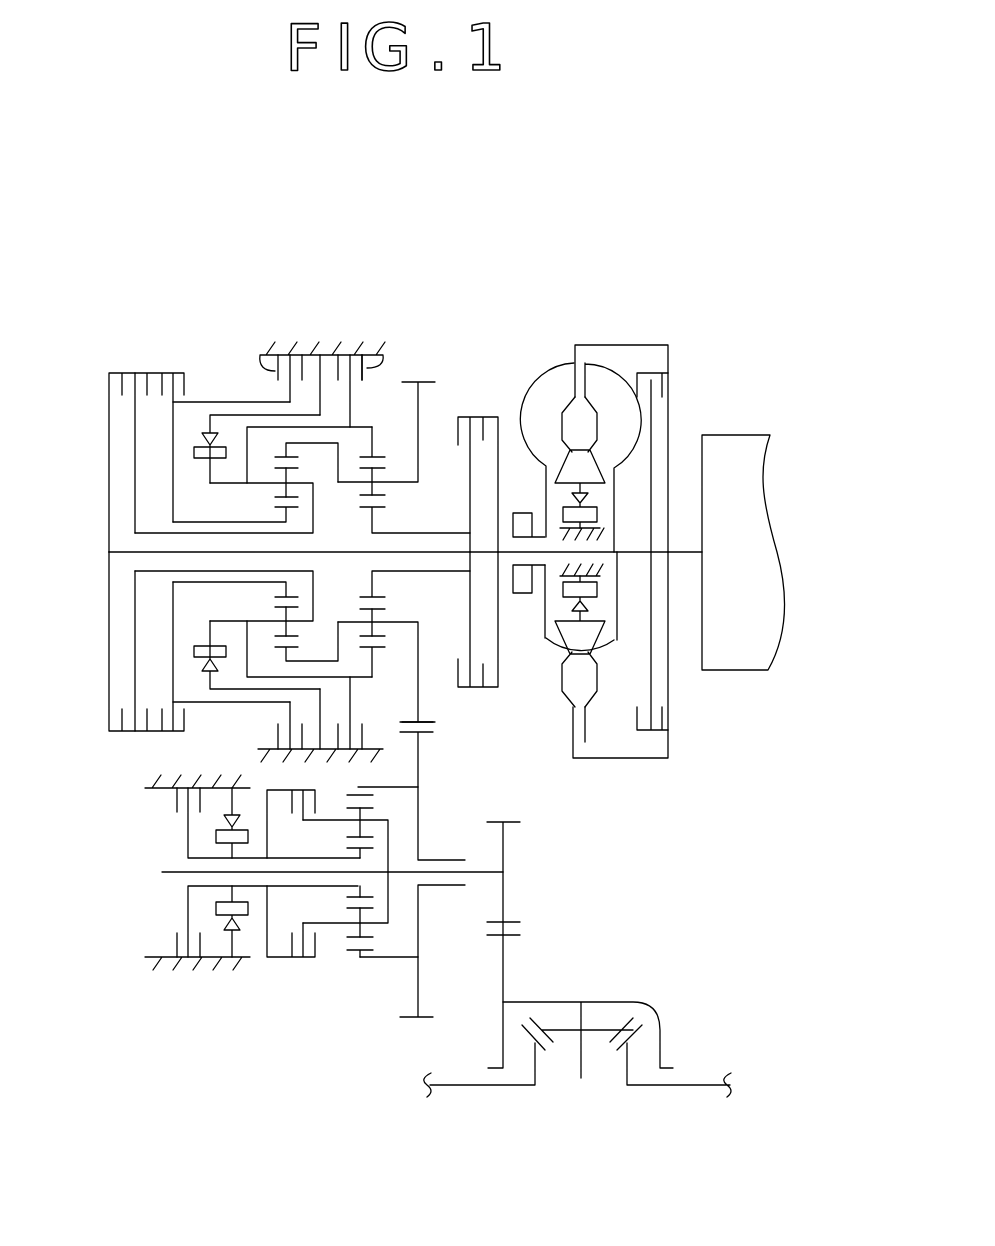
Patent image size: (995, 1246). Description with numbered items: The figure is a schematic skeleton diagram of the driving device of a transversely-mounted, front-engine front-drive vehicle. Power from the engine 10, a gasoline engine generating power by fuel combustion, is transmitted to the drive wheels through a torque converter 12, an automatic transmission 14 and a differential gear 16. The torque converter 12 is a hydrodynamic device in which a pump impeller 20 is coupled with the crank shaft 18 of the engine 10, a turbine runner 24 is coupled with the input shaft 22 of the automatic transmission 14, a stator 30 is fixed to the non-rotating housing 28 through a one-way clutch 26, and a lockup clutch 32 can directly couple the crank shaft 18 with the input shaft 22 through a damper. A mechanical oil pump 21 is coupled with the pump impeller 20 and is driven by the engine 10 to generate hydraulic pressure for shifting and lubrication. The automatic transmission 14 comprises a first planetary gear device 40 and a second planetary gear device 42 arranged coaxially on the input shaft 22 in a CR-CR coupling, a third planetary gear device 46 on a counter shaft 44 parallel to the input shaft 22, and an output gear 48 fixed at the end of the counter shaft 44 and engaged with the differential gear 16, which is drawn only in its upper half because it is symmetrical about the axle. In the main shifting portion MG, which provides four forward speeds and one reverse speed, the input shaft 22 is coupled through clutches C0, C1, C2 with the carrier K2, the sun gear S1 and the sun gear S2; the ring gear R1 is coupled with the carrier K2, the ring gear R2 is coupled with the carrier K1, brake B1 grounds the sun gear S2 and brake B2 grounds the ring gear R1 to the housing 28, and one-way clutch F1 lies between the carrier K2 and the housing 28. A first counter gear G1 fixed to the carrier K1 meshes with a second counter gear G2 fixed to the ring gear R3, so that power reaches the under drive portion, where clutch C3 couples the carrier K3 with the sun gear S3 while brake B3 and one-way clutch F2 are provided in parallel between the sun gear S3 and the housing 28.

The engine 10 is at (740, 453).
The torque converter 12 is at (625, 519).
The automatic transmission 14 is at (350, 479).
The differential gear 16 is at (573, 948).
The crank shaft 18 is at (688, 557).
The pump impeller 20 is at (563, 380).
The mechanical oil pump 21 is at (522, 513).
The input shaft 22 is at (442, 555).
The turbine runner 24 is at (598, 723).
The one-way clutch 26 is at (567, 637).
The housing 28 is at (562, 572).
The stator 30 is at (575, 467).
The lockup clutch 32 is at (667, 387).
The first planetary gear device 40 is at (404, 427).
The second planetary gear device 42 is at (253, 439).
The counter shaft 44 is at (173, 870).
The third planetary gear device 46 is at (349, 917).
The output gear 48 is at (513, 920).
The main shifting portion MG is at (89, 687).
The clutch C0 is at (125, 372).
The clutch C1 is at (473, 417).
The clutch C2 is at (172, 372).
The clutch C3 is at (310, 957).
The brake B1 is at (270, 352).
The brake B2 is at (378, 352).
The brake B3 is at (173, 947).
The one-way clutch F1 is at (198, 452).
The one-way clutch F2 is at (237, 923).
The ring gear R1 is at (397, 445).
The ring gear R2 is at (300, 452).
The ring gear R3 is at (353, 795).
The carrier K1 is at (403, 482).
The carrier K2 is at (260, 483).
The carrier K3 is at (370, 820).
The sun gear S1 is at (377, 507).
The sun gear S2 is at (280, 508).
The sun gear S3 is at (353, 848).
The first counter gear G1 is at (430, 717).
The second counter gear G2 is at (428, 1017).